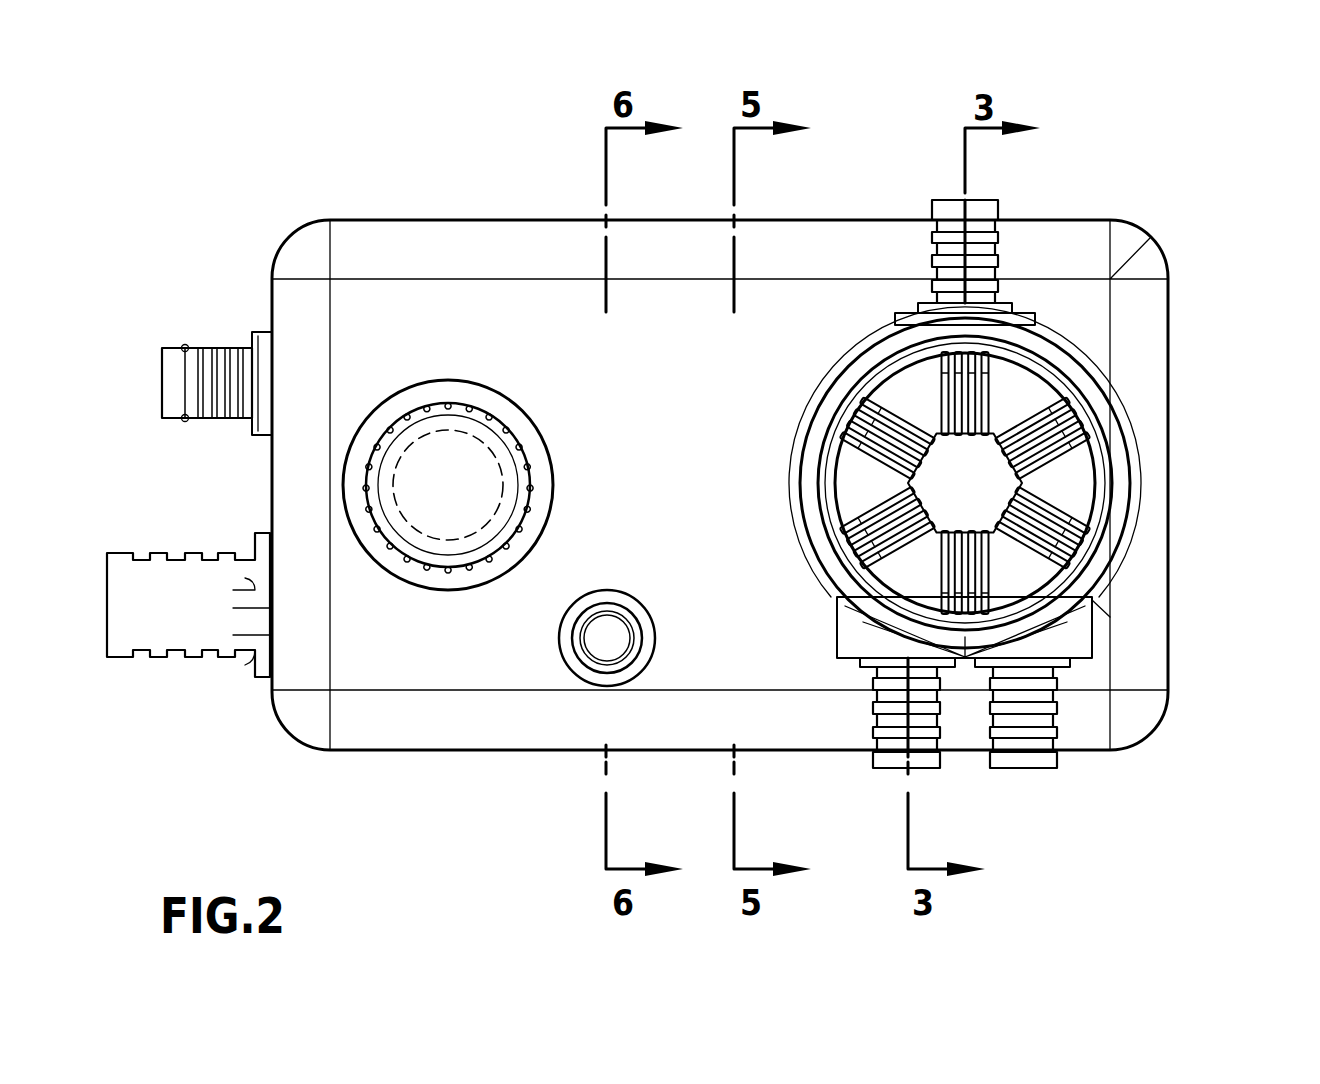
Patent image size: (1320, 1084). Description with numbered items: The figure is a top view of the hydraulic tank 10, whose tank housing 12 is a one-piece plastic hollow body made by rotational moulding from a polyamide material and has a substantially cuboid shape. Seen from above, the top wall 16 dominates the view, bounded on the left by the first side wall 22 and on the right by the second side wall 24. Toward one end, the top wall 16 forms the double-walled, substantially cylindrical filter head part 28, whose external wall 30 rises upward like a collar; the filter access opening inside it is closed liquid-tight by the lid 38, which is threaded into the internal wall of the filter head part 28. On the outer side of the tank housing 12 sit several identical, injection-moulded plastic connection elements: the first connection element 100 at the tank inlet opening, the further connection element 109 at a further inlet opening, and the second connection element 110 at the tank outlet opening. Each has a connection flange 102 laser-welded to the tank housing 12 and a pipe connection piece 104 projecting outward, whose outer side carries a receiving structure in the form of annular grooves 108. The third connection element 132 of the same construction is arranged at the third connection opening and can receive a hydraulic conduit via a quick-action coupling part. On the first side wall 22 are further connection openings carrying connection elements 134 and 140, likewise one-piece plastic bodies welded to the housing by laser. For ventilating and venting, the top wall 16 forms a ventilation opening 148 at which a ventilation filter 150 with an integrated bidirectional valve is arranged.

The hydraulic tank 10 is at (1215, 193).
The tank housing 12 is at (1158, 305).
The top wall 16 is at (512, 303).
The first side wall 22 is at (275, 492).
The second side wall 24 is at (1168, 450).
The filter head part 28 is at (1117, 408).
The external wall 30 is at (1132, 508).
The lid 38 is at (1015, 382).
The first connection element 100 is at (893, 780).
The connection flange 102 is at (1005, 307).
The pipe connection piece 104 is at (630, 622).
The annular grooves 108 is at (933, 268).
The further connection element 109 is at (1065, 760).
The second connection element 110 is at (942, 198).
The third connection element 132 is at (622, 598).
The connection element 134 is at (200, 343).
The connection element 140 is at (192, 665).
The ventilation opening 148 is at (430, 432).
The ventilation filter 150 is at (437, 565).